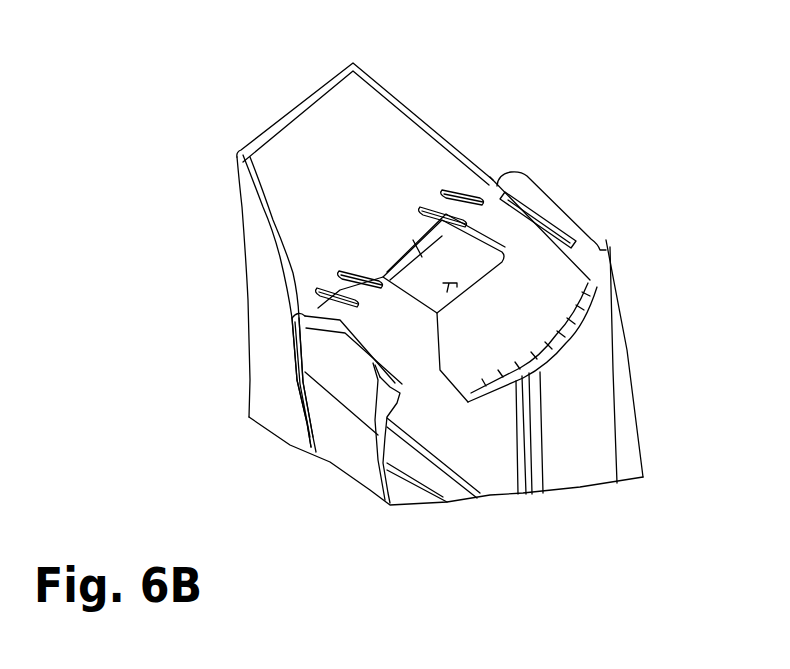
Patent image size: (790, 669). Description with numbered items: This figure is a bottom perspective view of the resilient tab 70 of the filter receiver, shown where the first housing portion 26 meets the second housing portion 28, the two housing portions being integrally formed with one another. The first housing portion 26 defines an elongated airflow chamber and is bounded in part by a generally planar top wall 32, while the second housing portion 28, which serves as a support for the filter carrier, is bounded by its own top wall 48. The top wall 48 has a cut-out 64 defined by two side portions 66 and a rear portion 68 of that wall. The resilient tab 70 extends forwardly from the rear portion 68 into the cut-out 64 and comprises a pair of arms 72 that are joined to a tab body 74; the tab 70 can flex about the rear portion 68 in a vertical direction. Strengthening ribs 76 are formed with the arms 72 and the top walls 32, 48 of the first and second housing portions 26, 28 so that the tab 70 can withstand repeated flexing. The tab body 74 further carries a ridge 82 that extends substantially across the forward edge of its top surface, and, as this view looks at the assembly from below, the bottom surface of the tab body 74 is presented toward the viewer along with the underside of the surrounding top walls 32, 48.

The first housing portion 26 is at (245, 312).
The second housing portion 28 is at (294, 378).
The top wall 32 is at (380, 113).
The top wall 48 is at (548, 193).
The cut-out 64 is at (443, 292).
The side portions 66 is at (547, 220).
The rear portion 68 is at (422, 257).
The resilient tab 70 is at (587, 270).
The arms 72 is at (505, 230).
The tab body 74 is at (527, 313).
The strengthening ribs 76 is at (423, 257).
The ridge 82 is at (592, 303).